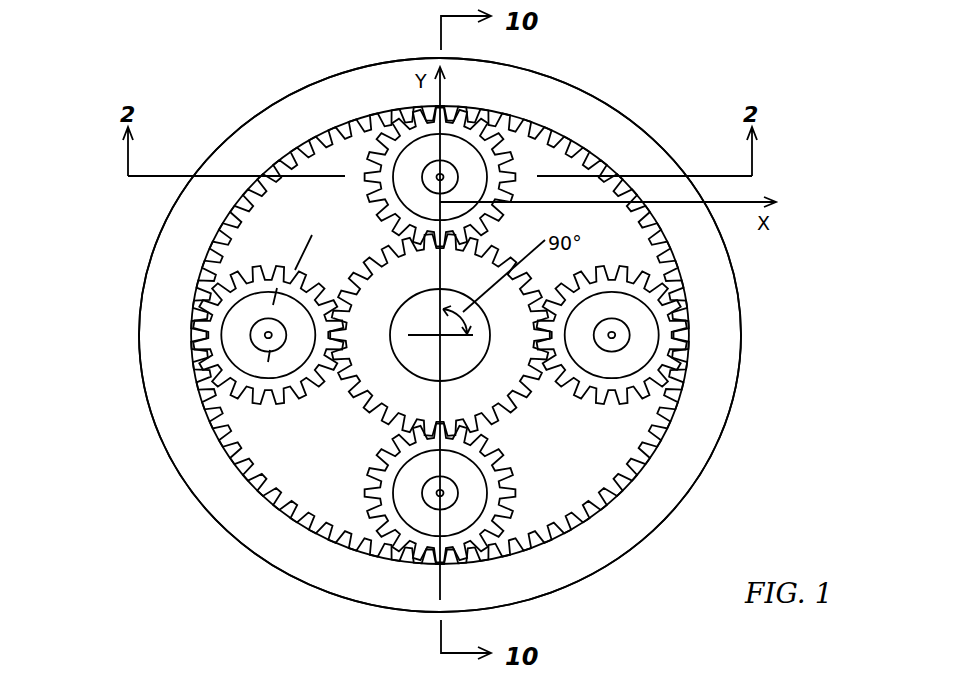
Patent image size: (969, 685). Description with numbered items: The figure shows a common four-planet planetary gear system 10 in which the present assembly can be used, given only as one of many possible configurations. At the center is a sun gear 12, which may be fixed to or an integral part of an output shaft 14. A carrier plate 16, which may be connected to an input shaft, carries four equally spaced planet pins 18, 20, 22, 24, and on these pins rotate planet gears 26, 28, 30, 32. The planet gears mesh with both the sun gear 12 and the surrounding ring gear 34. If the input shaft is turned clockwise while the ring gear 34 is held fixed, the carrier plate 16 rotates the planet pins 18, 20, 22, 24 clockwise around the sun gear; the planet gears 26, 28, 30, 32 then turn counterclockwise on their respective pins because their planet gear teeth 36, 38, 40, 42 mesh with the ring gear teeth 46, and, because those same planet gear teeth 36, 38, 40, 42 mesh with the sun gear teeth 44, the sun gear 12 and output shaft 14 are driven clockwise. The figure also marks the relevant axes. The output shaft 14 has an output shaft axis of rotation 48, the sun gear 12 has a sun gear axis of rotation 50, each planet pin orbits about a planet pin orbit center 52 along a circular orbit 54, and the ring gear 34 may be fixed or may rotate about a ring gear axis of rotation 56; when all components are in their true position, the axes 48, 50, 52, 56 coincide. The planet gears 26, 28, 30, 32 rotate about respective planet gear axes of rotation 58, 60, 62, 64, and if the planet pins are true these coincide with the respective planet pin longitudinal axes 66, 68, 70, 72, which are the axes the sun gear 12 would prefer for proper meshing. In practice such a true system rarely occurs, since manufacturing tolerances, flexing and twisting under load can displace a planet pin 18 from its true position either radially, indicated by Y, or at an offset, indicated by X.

The planetary gear system 10 is at (205, 46).
The sun gear 12 is at (381, 344).
The output shaft 14 is at (548, 490).
The carrier plate 16 is at (560, 527).
The planet pin 18 is at (428, 168).
The planet pin 20 is at (650, 352).
The planet pin 22 is at (405, 548).
The planet pin 24 is at (256, 347).
The planet gear 26 is at (385, 140).
The planet gear 28 is at (614, 398).
The planet gear 30 is at (428, 505).
The planet gear 32 is at (262, 378).
The ring gear 34 is at (578, 88).
The planet gear teeth 36 is at (392, 178).
The planet gear teeth 38 is at (600, 412).
The planet gear teeth 40 is at (393, 495).
The planet gear teeth 42 is at (300, 425).
The sun gear teeth 44 is at (383, 252).
The ring gear teeth 46 is at (570, 145).
The output shaft axis of rotation 48 is at (190, 497).
The sun gear axis of rotation 50 is at (190, 497).
The planet pin orbit center 52 is at (190, 497).
The circular orbit 54 is at (300, 240).
The ring gear axis of rotation 56 is at (340, 455).
The planet gear axis of rotation 58 is at (537, 107).
The planet gear axis of rotation 60 is at (723, 295).
The planet gear axis of rotation 62 is at (536, 567).
The planet gear axis of rotation 64 is at (158, 295).
The planet pin longitudinal axis 66 is at (443, 174).
The planet pin longitudinal axis 68 is at (614, 333).
The planet pin longitudinal axis 70 is at (442, 496).
The planet pin longitudinal axis 72 is at (266, 334).